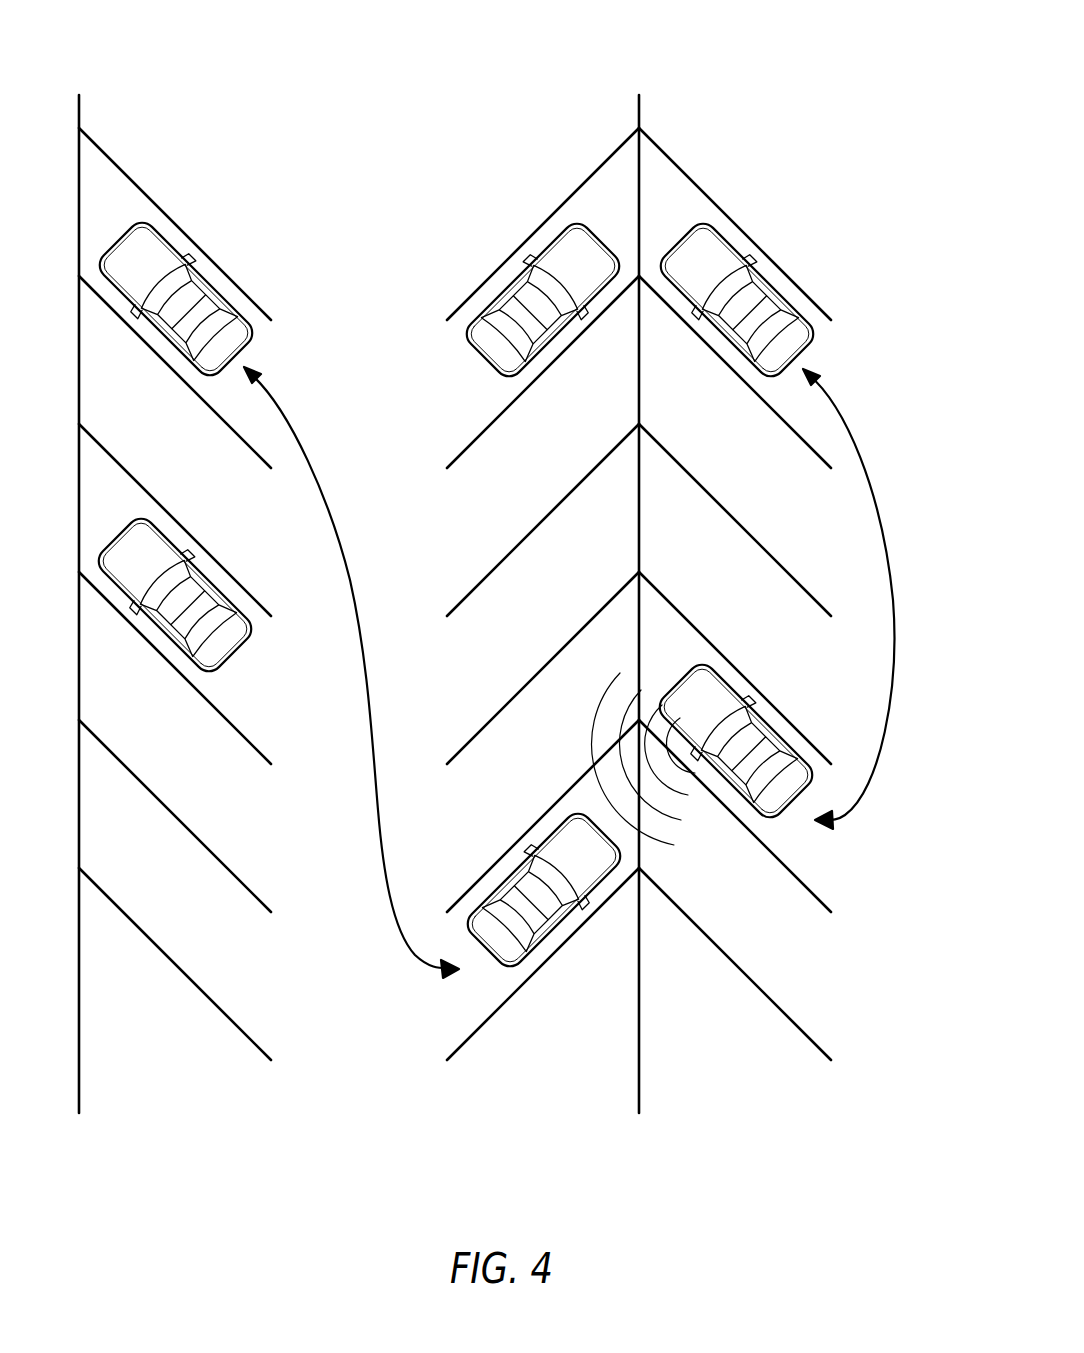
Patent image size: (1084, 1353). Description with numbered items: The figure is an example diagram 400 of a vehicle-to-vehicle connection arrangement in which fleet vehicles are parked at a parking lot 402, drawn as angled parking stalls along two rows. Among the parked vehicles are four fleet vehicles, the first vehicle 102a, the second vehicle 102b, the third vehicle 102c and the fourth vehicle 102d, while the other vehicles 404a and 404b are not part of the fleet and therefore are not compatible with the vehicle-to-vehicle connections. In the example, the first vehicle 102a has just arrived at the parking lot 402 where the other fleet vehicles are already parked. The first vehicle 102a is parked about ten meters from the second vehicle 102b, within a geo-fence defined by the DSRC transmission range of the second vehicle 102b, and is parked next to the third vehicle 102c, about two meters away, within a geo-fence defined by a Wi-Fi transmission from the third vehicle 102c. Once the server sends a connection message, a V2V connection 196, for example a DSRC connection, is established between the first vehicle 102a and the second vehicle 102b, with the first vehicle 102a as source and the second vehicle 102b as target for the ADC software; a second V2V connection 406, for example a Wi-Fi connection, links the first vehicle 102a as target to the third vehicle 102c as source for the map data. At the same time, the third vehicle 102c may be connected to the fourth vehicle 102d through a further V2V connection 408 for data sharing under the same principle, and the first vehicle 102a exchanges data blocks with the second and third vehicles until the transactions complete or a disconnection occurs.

The example diagram 400 is at (510, 1198).
The parking lot 402 is at (583, 120).
The first vehicle 102a is at (550, 830).
The second vehicle 102b is at (200, 272).
The third vehicle 102c is at (715, 670).
The fourth vehicle 102d is at (763, 273).
The vehicle 404a is at (200, 568).
The vehicle 404b is at (513, 274).
The V2V connection 196 is at (377, 800).
The V2V connection 408 is at (880, 500).
The second V2V connection 406 is at (680, 812).